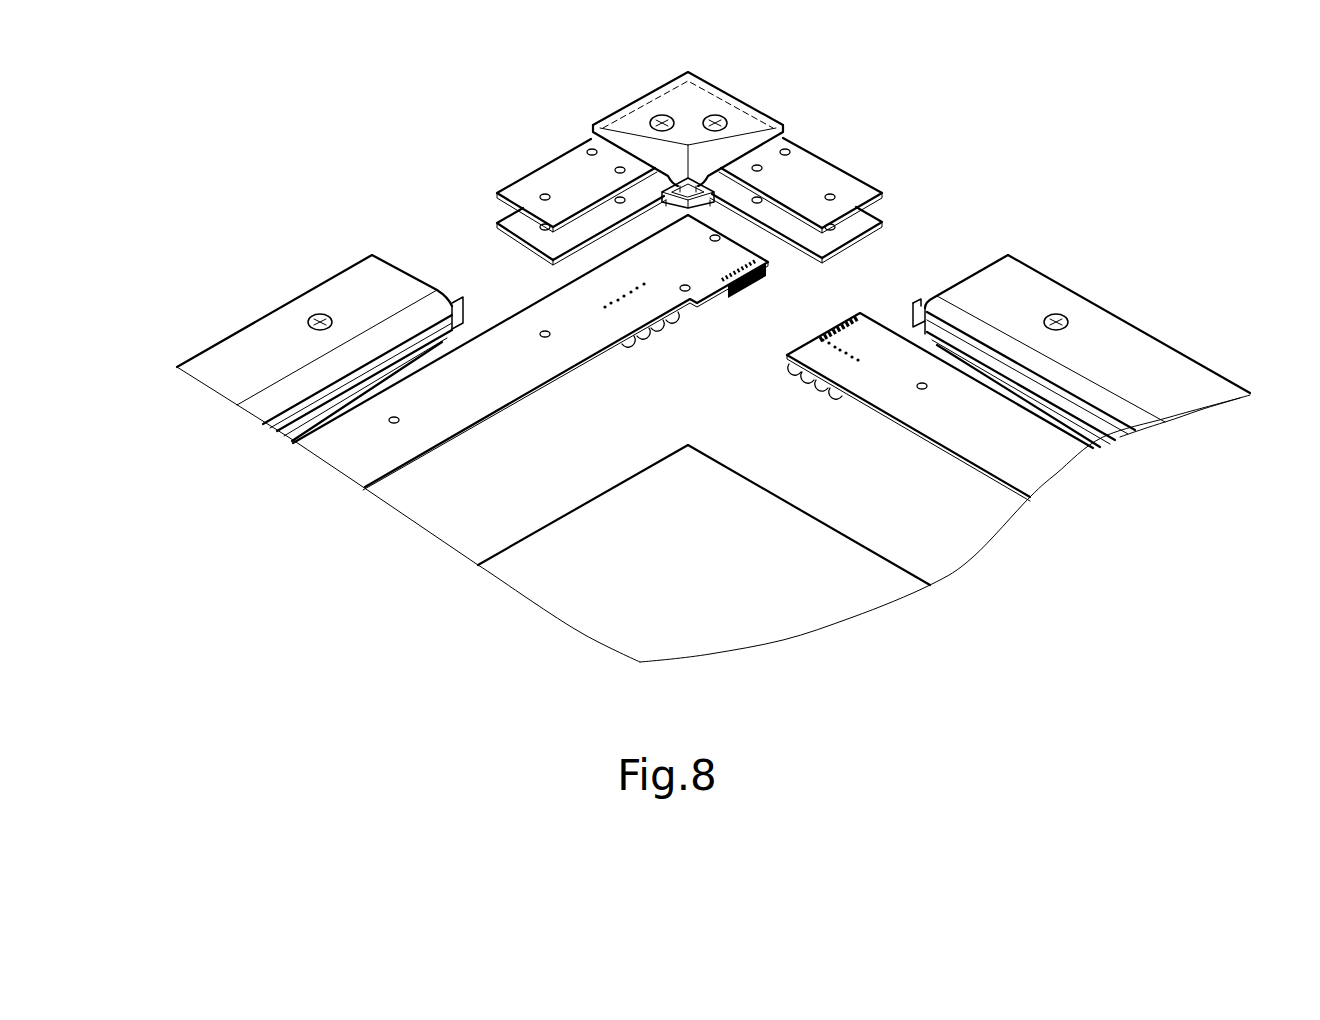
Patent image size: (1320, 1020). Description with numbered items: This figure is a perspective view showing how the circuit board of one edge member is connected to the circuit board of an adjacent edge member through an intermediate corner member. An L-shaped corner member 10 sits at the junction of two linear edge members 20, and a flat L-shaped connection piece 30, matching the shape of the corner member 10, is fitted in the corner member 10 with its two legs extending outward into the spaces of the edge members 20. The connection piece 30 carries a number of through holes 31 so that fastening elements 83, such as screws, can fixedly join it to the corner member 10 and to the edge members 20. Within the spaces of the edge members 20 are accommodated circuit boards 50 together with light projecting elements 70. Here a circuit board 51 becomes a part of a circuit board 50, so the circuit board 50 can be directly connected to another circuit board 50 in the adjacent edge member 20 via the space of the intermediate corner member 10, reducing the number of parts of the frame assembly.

The corner member 10 is at (688, 120).
The edge member 20 is at (1006, 253).
The connection piece 30 is at (692, 160).
The through hole 31 is at (790, 148).
The circuit board 50 is at (693, 358).
The circuit board 51 is at (710, 289).
The light projecting element 70 is at (659, 331).
The fastening element 83 is at (655, 114).